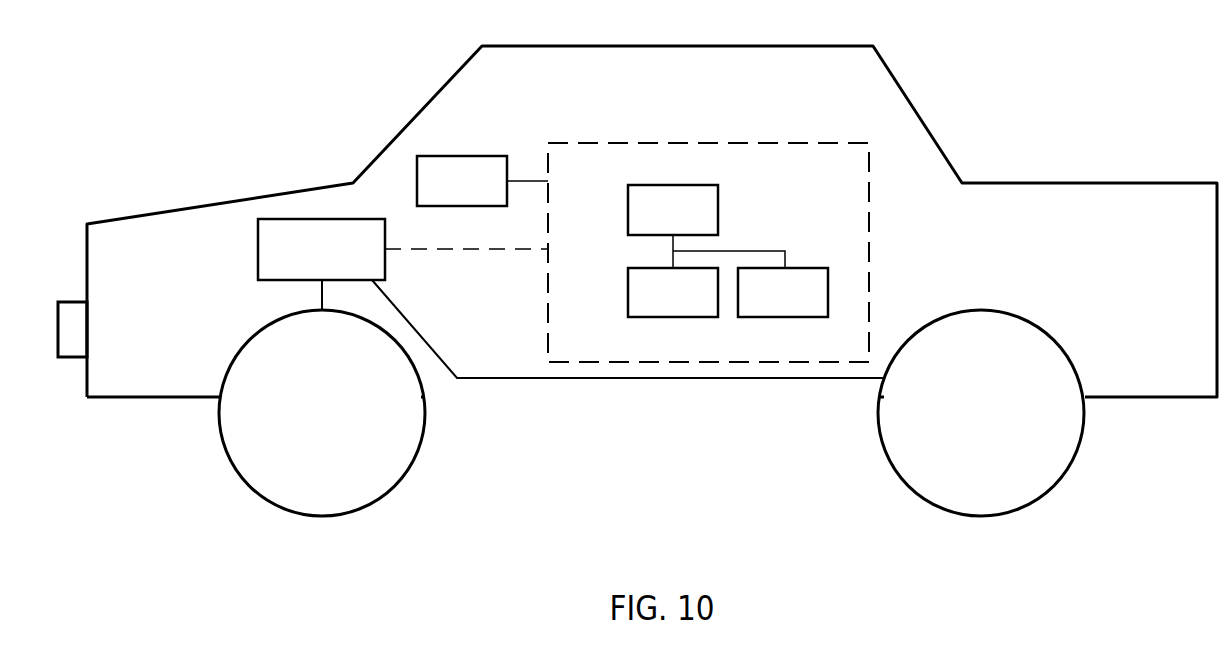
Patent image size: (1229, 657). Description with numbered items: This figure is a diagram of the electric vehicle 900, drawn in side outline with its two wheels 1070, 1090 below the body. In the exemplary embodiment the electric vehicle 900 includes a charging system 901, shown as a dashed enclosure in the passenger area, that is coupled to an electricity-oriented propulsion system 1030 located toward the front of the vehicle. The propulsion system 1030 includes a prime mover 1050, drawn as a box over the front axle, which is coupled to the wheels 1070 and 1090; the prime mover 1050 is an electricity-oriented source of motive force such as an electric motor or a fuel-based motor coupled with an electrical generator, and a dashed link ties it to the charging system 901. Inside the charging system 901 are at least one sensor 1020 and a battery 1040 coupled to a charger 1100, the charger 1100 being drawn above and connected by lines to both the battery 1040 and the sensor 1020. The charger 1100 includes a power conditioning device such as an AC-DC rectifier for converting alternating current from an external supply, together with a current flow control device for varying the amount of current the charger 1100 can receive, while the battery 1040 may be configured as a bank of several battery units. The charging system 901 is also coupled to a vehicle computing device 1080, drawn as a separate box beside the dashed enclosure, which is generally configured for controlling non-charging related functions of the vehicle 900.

The electric vehicle 900 is at (215, 160).
The charging system 901 is at (535, 143).
The electricity-oriented propulsion system 1030 is at (222, 263).
The prime mover 1050 is at (299, 264).
The wheel 1070 is at (298, 428).
The wheel 1090 is at (958, 429).
The vehicle computing device 1080 is at (482, 181).
The charger 1100 is at (650, 223).
The battery 1040 is at (650, 306).
The sensor 1020 is at (760, 306).